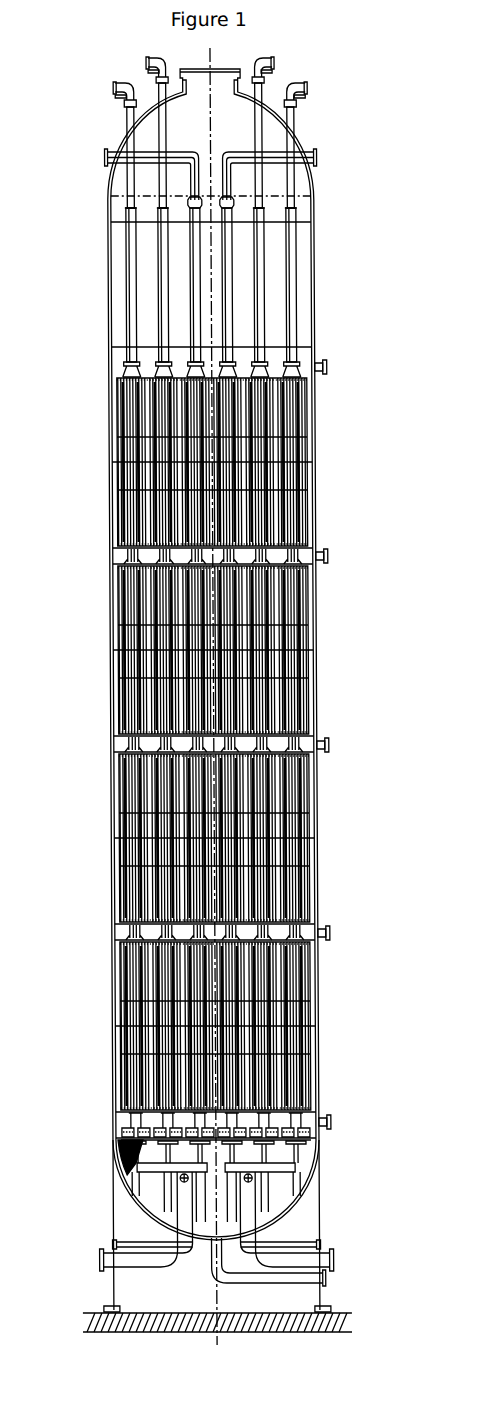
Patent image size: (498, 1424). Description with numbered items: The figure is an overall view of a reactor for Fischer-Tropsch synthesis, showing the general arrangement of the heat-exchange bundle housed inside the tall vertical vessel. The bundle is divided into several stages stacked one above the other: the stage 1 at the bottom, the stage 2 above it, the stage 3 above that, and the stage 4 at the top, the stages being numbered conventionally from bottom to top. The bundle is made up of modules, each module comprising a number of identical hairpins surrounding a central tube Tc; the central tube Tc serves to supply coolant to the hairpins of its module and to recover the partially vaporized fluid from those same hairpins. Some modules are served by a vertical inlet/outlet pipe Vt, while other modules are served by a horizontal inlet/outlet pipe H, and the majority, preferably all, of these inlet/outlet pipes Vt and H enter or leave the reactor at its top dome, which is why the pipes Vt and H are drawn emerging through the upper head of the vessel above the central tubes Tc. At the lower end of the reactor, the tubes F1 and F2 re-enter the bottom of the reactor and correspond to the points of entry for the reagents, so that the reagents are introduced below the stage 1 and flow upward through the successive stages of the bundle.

The vertical inlet/outlet pipe Vt is at (141, 62).
The horizontal inlet/outlet pipe H is at (114, 148).
The central tube Tc is at (187, 277).
The stage 4 is at (71, 373).
The stage 3 is at (71, 561).
The stage 2 is at (70, 749).
The stage 1 is at (70, 937).
The tube F1 is at (130, 1238).
The tube F2 is at (302, 1238).